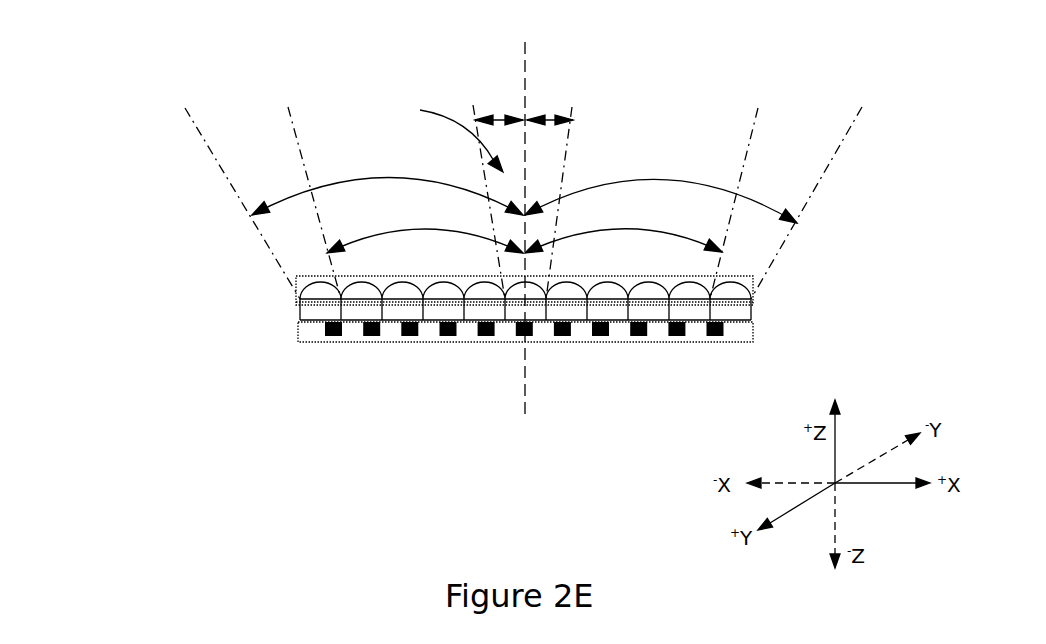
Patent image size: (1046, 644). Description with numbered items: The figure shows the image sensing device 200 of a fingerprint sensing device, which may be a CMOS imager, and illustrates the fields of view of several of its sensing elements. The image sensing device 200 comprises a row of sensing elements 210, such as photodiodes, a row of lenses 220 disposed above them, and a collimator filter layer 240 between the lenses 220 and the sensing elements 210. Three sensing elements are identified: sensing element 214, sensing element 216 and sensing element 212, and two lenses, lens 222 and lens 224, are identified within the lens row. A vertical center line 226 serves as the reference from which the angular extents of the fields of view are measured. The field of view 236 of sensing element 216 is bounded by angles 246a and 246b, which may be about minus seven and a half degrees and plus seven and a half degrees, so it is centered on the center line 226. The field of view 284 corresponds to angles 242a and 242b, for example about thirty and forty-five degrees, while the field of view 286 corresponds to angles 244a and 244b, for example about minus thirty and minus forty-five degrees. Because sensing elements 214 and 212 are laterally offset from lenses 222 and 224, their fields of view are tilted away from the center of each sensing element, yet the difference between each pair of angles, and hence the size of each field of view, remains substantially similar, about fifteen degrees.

The image sensing device 200 is at (138, 92).
The sensing elements 210 is at (297, 330).
The sensing element 212 is at (710, 343).
The sensing element 214 is at (341, 343).
The sensing element 216 is at (538, 343).
The lenses 220 is at (298, 293).
The lens 222 is at (737, 295).
The lens 224 is at (300, 296).
The center line 226 is at (527, 46).
The field of view 236 is at (440, 135).
The collimator filter layer 240 is at (297, 312).
The angle 242a is at (643, 178).
The angle 242b is at (626, 229).
The angle 244a is at (384, 178).
The angle 244b is at (408, 228).
The angle 246a is at (497, 95).
The angle 246b is at (550, 95).
The field of view 284 is at (798, 125).
The field of view 286 is at (258, 125).